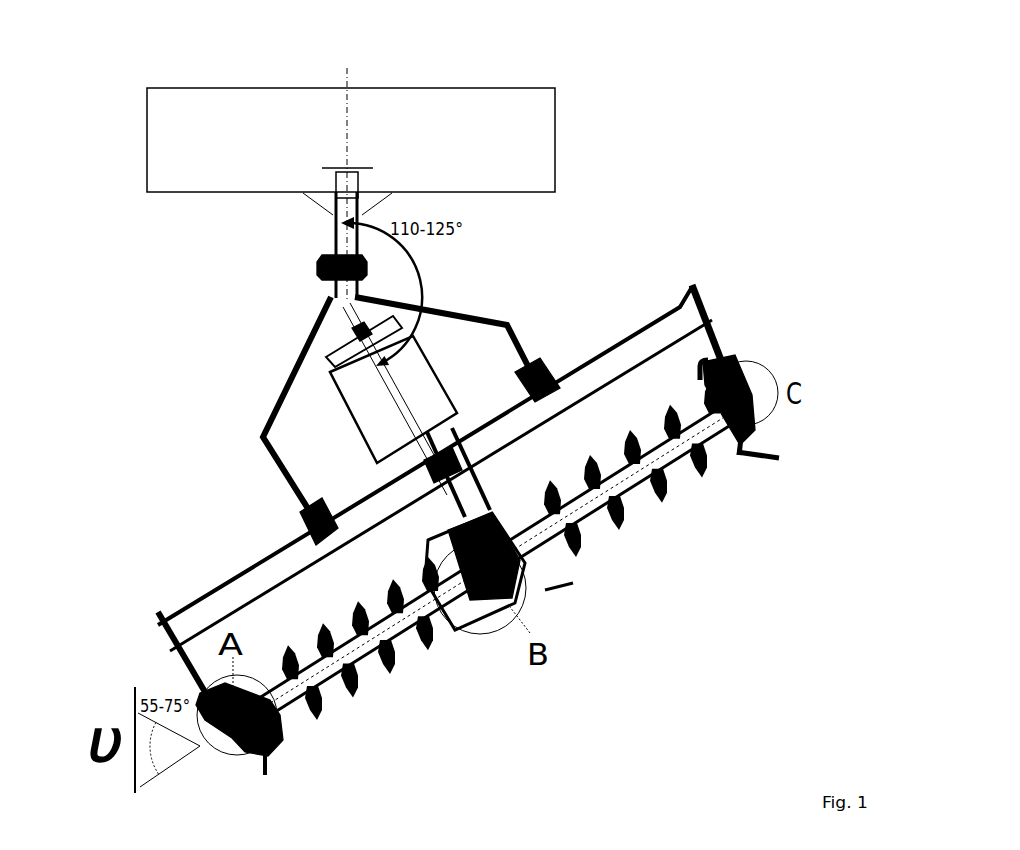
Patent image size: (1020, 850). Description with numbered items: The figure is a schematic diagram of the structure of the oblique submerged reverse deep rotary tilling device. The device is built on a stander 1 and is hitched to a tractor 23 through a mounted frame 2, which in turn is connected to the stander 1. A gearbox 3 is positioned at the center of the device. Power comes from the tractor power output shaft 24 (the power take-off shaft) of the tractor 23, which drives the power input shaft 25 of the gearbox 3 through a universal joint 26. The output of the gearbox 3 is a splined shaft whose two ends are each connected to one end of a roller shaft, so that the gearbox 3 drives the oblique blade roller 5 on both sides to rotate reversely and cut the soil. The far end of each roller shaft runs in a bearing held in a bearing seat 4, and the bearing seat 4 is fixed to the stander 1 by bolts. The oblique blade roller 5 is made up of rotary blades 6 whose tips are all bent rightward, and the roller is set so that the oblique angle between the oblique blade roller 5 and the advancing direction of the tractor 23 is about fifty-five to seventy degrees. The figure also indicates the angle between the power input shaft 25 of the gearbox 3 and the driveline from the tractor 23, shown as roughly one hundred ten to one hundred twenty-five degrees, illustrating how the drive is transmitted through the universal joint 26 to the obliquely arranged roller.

The stander 1 is at (203, 612).
The mounted frame 2 is at (262, 420).
The gearbox 3 is at (402, 378).
The bearing seat 4 is at (743, 357).
The oblique blade roller 5 is at (683, 437).
The rotary blade 6 is at (573, 583).
The tractor 23 is at (518, 95).
The tractor power output shaft 24 is at (350, 166).
The power input shaft 25 is at (353, 337).
The universal joint 26 is at (327, 287).